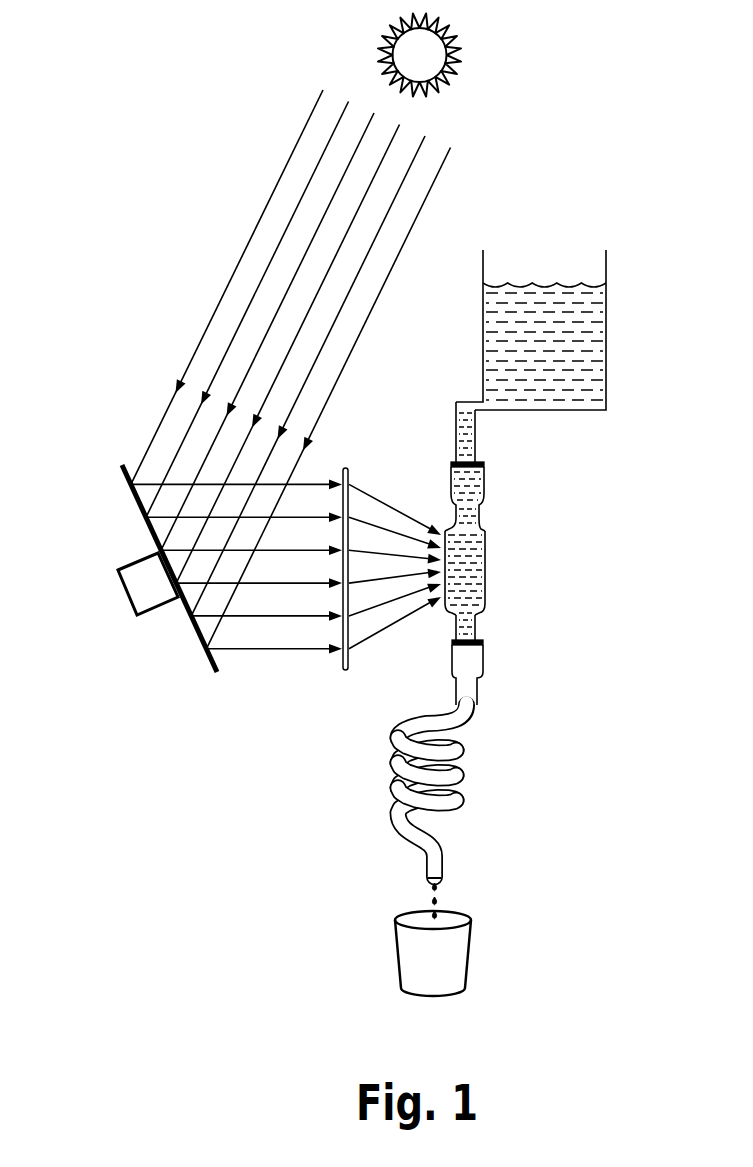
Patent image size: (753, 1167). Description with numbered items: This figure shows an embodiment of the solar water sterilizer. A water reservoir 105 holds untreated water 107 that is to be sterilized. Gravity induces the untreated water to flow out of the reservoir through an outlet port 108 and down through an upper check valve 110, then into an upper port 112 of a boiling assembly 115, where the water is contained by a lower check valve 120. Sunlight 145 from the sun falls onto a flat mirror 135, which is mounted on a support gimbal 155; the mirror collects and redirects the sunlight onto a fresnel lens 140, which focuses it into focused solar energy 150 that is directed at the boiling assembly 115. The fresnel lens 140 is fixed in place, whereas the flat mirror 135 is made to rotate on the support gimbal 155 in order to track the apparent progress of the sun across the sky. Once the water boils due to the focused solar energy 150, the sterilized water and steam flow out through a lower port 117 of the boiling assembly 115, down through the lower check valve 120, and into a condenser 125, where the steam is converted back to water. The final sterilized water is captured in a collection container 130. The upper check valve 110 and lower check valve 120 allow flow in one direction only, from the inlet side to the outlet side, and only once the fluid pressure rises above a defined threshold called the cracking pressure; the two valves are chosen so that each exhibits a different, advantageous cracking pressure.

The water reservoir 105 is at (606, 340).
The untreated water 107 is at (572, 378).
The outlet port 108 is at (480, 400).
The upper check valve 110 is at (485, 483).
The upper port 112 is at (478, 521).
The boiling assembly 115 is at (485, 558).
The lower port 117 is at (483, 613).
The lower check valve 120 is at (485, 648).
The condenser 125 is at (455, 778).
The collection container 130 is at (475, 948).
The flat mirror 135 is at (137, 505).
The fresnel lens 140 is at (342, 662).
The sunlight 145 is at (232, 249).
The focused solar energy 150 is at (414, 498).
The support gimbal 155 is at (118, 571).